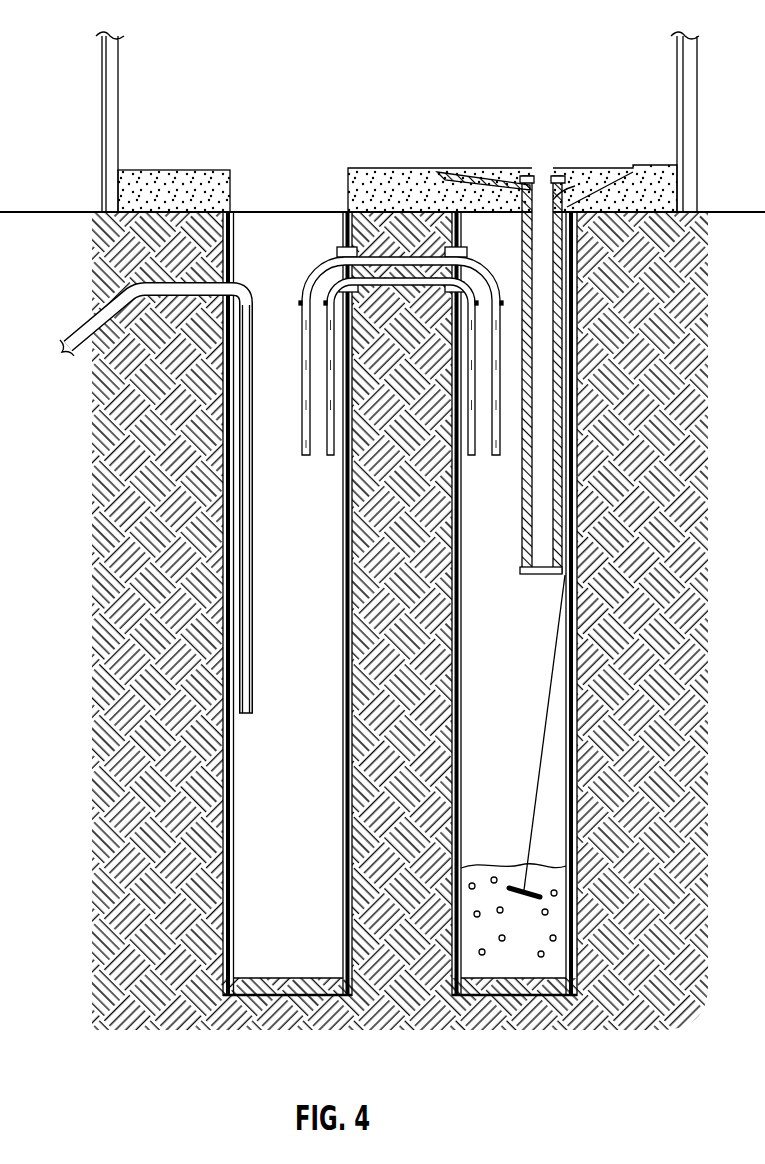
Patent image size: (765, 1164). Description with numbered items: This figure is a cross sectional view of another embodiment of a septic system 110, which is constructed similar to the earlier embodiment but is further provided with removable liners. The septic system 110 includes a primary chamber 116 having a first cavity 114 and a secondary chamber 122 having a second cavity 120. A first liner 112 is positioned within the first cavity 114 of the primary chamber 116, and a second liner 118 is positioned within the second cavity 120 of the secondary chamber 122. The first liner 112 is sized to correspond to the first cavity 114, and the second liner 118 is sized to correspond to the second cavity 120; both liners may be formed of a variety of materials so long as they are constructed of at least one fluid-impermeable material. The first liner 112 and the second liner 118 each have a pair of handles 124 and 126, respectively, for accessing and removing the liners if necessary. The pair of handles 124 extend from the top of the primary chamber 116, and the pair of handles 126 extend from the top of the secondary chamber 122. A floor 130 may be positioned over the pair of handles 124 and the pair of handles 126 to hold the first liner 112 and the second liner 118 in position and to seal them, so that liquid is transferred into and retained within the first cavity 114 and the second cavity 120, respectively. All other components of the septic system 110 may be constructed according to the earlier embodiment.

The septic system 110 is at (128, 625).
The first liner 112 is at (463, 688).
The first cavity 114 is at (538, 782).
The primary chamber 116 is at (590, 694).
The second liner 118 is at (241, 824).
The second cavity 120 is at (310, 781).
The secondary chamber 122 is at (371, 741).
The pair of handles 124 is at (592, 222).
The pair of handles 126 is at (218, 224).
The floor 130 is at (162, 170).